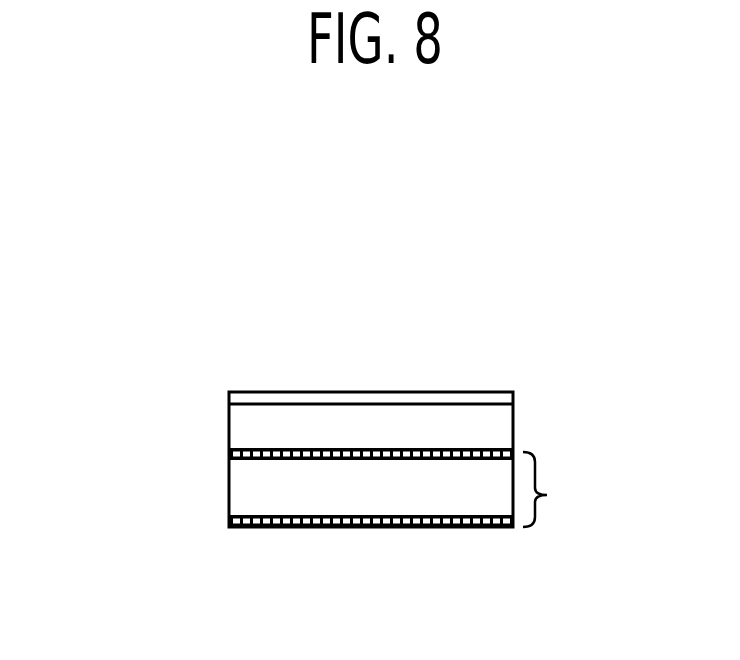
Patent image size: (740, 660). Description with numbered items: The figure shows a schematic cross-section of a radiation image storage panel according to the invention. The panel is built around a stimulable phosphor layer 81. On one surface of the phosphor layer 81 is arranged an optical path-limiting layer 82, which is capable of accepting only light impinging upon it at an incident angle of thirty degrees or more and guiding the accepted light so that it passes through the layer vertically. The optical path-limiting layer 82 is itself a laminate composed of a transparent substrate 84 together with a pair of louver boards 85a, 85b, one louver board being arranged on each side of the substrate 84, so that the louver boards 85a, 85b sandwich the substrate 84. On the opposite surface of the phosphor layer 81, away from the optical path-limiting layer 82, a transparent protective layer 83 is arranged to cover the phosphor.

The stimulable phosphor layer 81 is at (512, 420).
The optical path-limiting layer 82 is at (561, 489).
The transparent protective layer 83 is at (477, 392).
The transparent substrate 84 is at (227, 480).
The louver board 85a is at (227, 450).
The louver board 85b is at (230, 527).